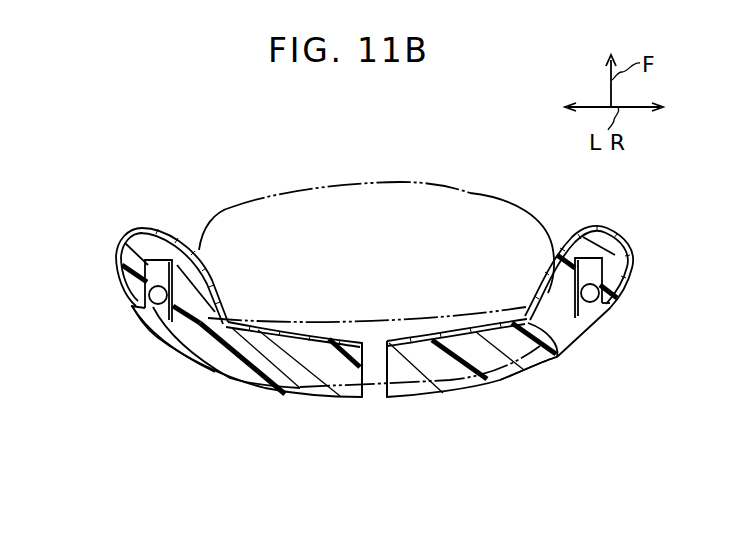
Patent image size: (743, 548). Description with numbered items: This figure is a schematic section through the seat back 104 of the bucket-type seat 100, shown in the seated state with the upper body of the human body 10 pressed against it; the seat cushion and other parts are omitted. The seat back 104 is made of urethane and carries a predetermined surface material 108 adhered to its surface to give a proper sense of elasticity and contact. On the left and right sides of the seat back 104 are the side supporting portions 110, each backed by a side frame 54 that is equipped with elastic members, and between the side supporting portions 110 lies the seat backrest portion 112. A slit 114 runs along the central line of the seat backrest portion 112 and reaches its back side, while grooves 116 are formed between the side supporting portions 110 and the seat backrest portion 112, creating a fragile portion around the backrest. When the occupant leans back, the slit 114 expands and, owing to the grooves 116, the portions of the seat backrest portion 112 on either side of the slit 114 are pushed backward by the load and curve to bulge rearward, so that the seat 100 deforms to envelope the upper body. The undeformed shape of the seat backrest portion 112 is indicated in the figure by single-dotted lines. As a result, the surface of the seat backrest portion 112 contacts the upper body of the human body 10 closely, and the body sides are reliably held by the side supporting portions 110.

The human body 10 is at (430, 186).
The side frame 54 is at (158, 303).
The seat 100 is at (241, 152).
The seat back 104 is at (327, 206).
The surface material 108 is at (166, 228).
The side supporting portion 110 is at (130, 225).
The seat backrest portion 112 is at (376, 313).
The slit 114 is at (363, 399).
The groove 116 is at (213, 337).